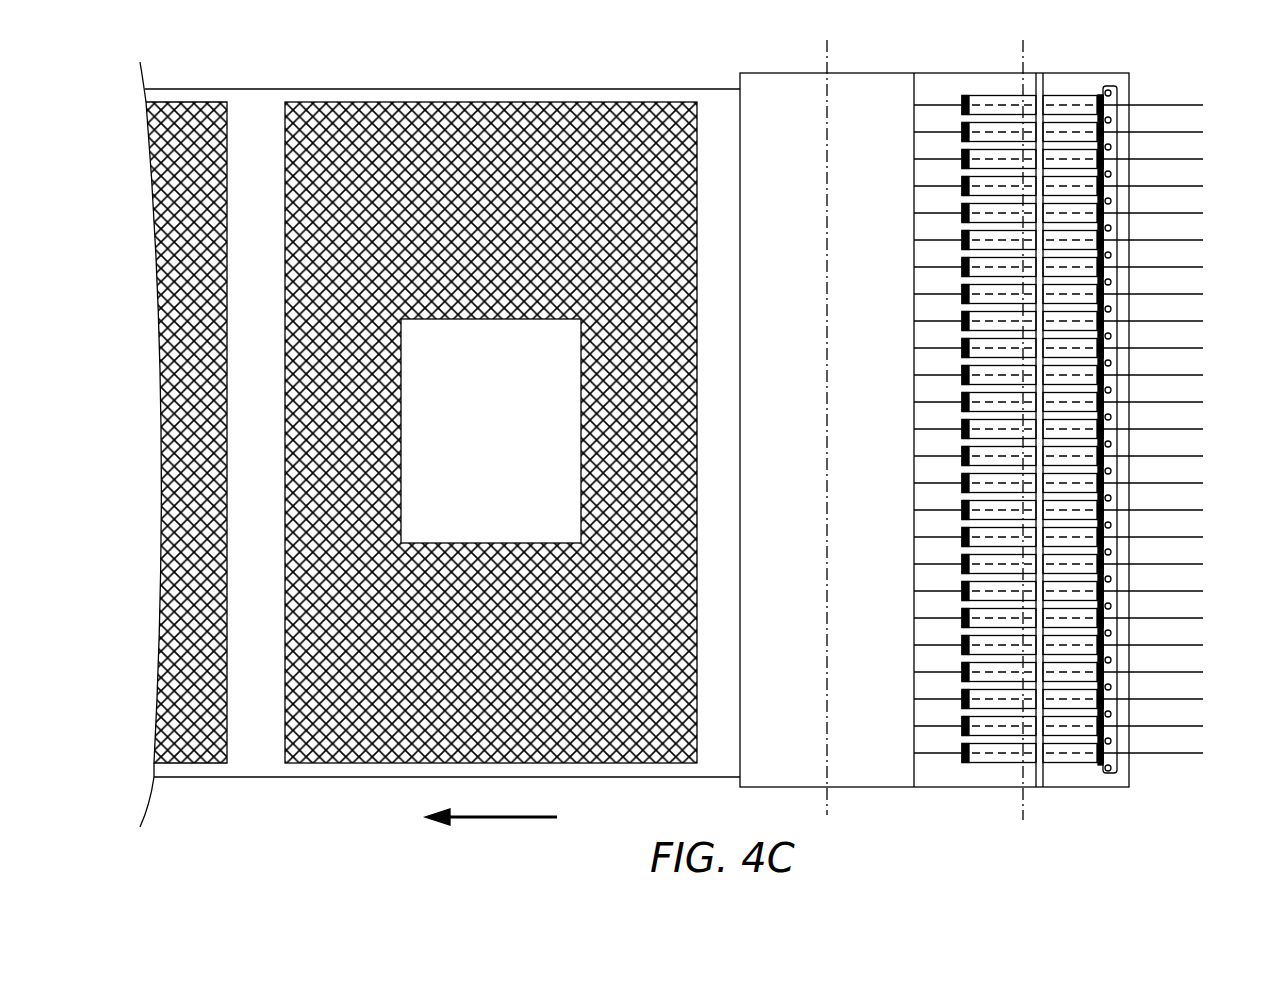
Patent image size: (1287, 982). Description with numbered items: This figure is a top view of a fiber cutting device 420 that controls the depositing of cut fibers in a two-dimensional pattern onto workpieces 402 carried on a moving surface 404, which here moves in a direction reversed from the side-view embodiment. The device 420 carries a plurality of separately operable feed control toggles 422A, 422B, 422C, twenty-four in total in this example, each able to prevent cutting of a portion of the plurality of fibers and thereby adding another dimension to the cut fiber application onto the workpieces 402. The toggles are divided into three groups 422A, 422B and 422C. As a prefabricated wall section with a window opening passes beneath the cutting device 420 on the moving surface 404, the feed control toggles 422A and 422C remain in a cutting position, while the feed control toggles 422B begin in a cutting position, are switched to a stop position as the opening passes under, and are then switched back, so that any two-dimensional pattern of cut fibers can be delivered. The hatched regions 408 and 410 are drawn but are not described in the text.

The workpieces 402 is at (491, 428).
The moving surface 404 is at (290, 773).
The edge region / gap 408 is at (247, 111).
The hatched material layer 410 is at (540, 745).
The fiber cutting device 420 is at (1011, 430).
The feed control toggles 422A is at (1213, 97).
The feed control toggles 422B is at (1213, 311).
The feed control toggles 422C is at (1213, 552).